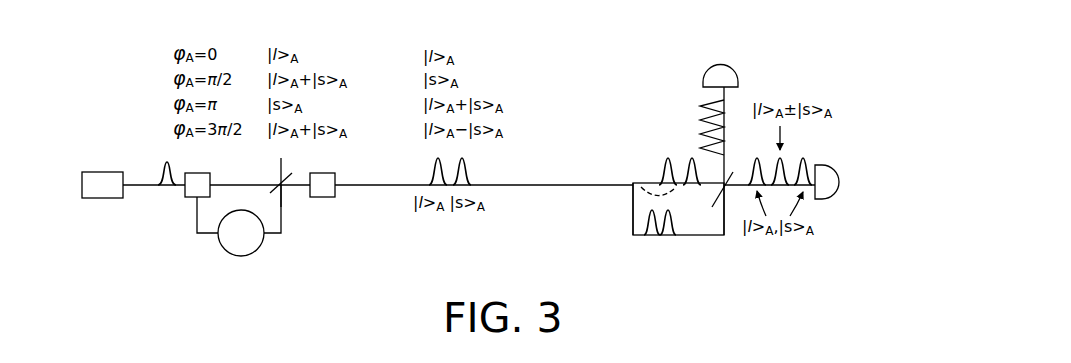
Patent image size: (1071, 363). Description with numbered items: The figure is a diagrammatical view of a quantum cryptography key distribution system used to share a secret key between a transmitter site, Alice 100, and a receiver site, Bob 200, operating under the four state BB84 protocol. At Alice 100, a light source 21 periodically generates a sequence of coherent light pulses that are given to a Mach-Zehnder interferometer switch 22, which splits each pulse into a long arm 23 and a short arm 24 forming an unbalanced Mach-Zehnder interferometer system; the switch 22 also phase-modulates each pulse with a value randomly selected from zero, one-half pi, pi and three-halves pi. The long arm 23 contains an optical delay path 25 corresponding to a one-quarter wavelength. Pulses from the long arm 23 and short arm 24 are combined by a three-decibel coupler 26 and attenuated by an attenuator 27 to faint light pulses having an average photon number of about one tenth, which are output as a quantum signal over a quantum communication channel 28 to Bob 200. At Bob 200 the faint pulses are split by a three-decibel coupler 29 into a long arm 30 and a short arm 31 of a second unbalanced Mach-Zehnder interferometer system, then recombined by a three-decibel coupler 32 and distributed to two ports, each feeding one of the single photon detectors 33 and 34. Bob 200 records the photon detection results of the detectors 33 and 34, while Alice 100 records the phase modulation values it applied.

The light source 21 is at (97, 172).
The Mach-Zehnder interferometer switch 22 is at (187, 175).
The long arm 23 is at (200, 233).
The short arm 24 is at (215, 184).
The optical delay path 25 is at (258, 250).
The 3 dB coupler 26 is at (283, 200).
The attenuator 27 is at (335, 192).
The quantum communication channel 28 is at (394, 186).
The 3 dB coupler 29 is at (633, 182).
The long arm 30 is at (690, 236).
The short arm 31 is at (660, 196).
The 3 dB coupler 32 is at (719, 191).
The single photon detector 33 is at (836, 175).
The single photon detector 34 is at (738, 70).
The transmitter site (Alice) 100 is at (229, 220).
The receiver site (Bob) 200 is at (737, 176).